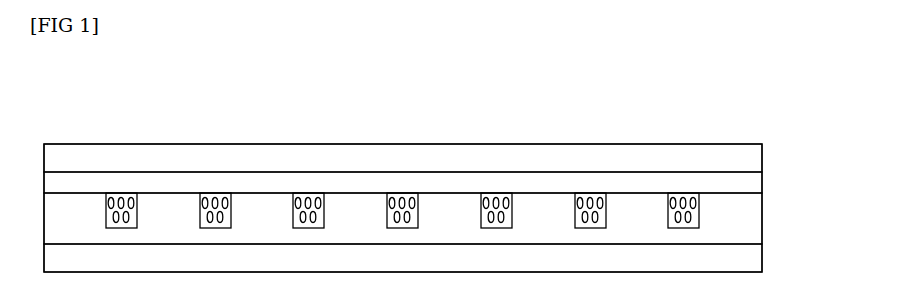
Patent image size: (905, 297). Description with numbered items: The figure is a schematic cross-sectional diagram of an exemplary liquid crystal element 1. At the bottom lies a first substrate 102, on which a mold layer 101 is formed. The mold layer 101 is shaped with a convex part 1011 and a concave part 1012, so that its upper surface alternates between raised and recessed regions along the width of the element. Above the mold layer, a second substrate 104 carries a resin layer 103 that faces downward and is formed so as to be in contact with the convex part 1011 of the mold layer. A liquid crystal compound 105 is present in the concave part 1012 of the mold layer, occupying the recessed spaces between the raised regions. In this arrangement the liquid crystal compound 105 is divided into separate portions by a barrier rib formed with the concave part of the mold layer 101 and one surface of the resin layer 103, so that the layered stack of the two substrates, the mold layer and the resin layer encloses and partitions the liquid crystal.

The liquid crystal element 1 is at (403, 180).
The mold layer 101 is at (753, 217).
The first substrate 102 is at (753, 262).
The resin layer 103 is at (753, 177).
The second substrate 104 is at (753, 152).
The liquid crystal compound 105 is at (495, 197).
The convex part 1011 is at (260, 212).
The concave part 1012 is at (323, 217).